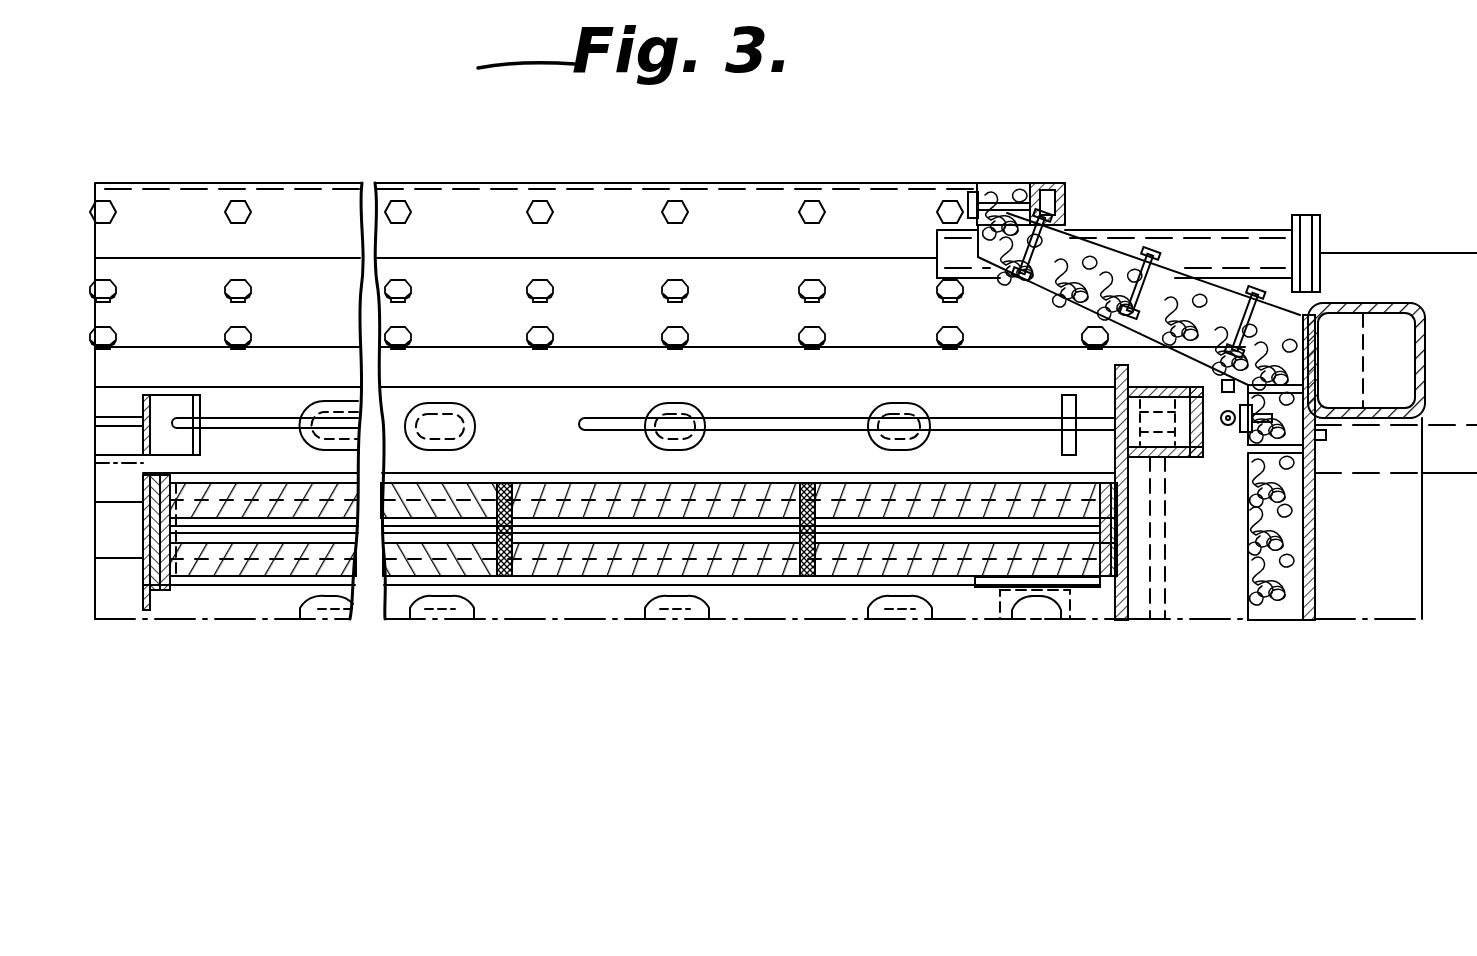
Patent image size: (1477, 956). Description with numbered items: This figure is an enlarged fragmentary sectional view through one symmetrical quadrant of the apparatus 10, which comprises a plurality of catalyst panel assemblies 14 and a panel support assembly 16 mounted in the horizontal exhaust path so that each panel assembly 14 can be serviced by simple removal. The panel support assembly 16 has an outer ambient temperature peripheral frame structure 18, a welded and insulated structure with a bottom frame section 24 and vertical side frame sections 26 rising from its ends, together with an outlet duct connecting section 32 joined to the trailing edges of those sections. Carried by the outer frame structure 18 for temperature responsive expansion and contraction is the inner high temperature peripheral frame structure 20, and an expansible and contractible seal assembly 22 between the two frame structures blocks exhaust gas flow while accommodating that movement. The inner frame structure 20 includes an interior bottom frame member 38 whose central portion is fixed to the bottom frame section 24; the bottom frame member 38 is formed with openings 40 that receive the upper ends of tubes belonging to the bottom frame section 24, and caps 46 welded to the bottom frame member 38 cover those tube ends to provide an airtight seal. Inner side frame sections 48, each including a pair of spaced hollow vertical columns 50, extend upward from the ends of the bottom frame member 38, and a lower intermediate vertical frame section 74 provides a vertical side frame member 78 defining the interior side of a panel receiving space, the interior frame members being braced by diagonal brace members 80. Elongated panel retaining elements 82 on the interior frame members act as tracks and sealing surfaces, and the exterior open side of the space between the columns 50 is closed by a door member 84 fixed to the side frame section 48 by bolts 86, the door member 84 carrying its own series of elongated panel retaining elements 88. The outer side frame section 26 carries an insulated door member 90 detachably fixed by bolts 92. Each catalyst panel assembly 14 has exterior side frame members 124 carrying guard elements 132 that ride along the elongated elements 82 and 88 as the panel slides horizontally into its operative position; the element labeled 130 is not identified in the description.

The apparatus 10 is at (288, 158).
The catalyst panel assembly 14 is at (1130, 555).
The panel support assembly 16 is at (1070, 188).
The outer ambient temperature peripheral frame structure 18 is at (1080, 232).
The inner high temperature peripheral frame structure 20 is at (965, 378).
The expansible and contractible seal assembly 22 is at (1225, 383).
The bottom frame section 24 is at (510, 380).
The vertical side frame section 26 is at (1415, 372).
The outlet duct connecting section 32 is at (1000, 198).
The interior bottom frame member 38 is at (600, 398).
The openings 40 is at (880, 412).
The caps 46 is at (475, 430).
The inner side frame section 48 is at (1062, 432).
The hollow vertical extending columns 50 is at (1172, 455).
The lower intermediate vertical frame section 74 is at (118, 605).
The vertical side frame member 78 is at (190, 456).
The diagonal brace members 80 is at (258, 412).
The panel retaining elements 82 is at (148, 543).
The door member 84 is at (1130, 618).
The bolts 86 is at (1118, 392).
The panel retaining elements 88 is at (1110, 478).
The insulated door members 90 is at (1315, 530).
The bolts 92 is at (1322, 440).
The side frame members 124 is at (170, 585).
The side plate 130 is at (148, 480).
The guard elements 132 is at (158, 585).